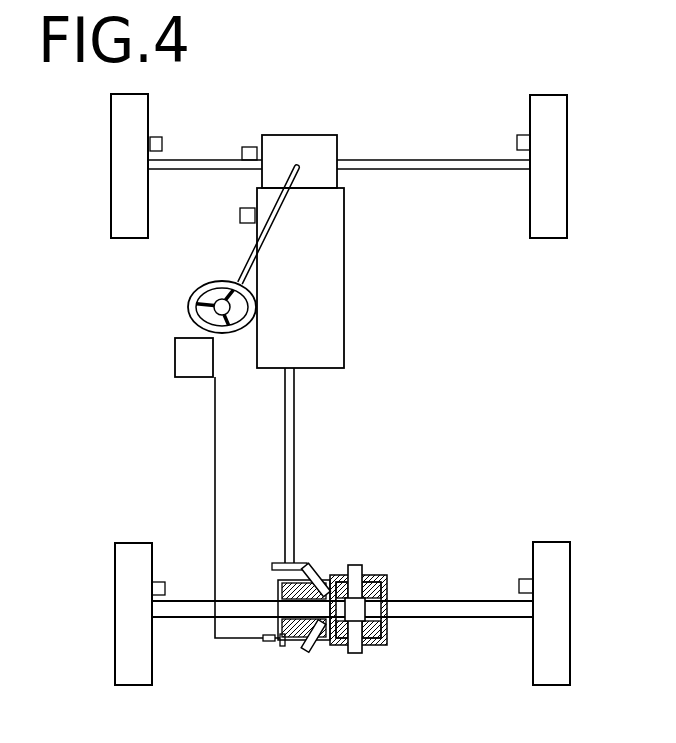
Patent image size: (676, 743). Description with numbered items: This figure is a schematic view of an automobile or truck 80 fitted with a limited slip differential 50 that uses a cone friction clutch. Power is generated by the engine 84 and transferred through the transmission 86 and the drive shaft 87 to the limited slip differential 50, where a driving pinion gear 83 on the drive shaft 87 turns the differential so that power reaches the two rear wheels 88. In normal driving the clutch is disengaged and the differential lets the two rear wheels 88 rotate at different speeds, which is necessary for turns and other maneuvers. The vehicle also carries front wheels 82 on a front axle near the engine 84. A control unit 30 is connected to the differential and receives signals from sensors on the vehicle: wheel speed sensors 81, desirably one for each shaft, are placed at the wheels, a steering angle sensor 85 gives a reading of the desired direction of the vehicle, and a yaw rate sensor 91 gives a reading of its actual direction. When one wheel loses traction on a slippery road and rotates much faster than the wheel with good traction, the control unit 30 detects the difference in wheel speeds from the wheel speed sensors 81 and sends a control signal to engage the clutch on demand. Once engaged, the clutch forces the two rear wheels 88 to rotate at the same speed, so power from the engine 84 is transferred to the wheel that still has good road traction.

The control unit 30 is at (175, 361).
The limited slip differential 50 is at (375, 553).
The automobile or truck 80 is at (163, 312).
The wheel speed sensor 81 is at (162, 143).
The front wheel 82 is at (148, 123).
The driving pinion gear 83 is at (272, 565).
The engine 84 is at (310, 135).
The steering angle sensor 85 is at (240, 216).
The transmission 86 is at (333, 287).
The drive shaft 87 is at (296, 440).
The rear wheel 88 is at (115, 661).
The yaw rate sensor 91 is at (247, 146).